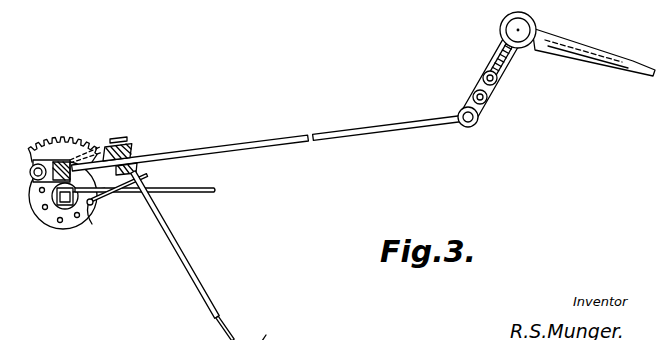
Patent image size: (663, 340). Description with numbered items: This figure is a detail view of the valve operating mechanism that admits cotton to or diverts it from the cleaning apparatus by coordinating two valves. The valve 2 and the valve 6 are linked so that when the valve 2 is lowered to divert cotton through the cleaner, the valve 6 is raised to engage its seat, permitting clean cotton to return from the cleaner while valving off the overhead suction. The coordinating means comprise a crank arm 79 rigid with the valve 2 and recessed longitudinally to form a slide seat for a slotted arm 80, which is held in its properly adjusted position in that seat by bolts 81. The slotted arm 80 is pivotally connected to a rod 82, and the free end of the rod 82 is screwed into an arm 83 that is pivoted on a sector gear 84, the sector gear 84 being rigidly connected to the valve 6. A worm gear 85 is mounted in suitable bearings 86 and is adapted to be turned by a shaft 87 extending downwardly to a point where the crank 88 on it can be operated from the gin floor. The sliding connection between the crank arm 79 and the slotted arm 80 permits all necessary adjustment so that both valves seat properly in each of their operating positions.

The valve 2 is at (590, 53).
The valve 6 is at (213, 193).
The crank arm 79 is at (509, 67).
The slotted arm 80 is at (491, 104).
The bolts 81 is at (470, 95).
The rod 82 is at (359, 130).
The arm 83 is at (42, 166).
The sector gear 84 is at (67, 164).
The worm gear 85 is at (112, 148).
The bearings 86 is at (90, 210).
The shaft 87 is at (183, 258).
The crank 88 is at (262, 339).